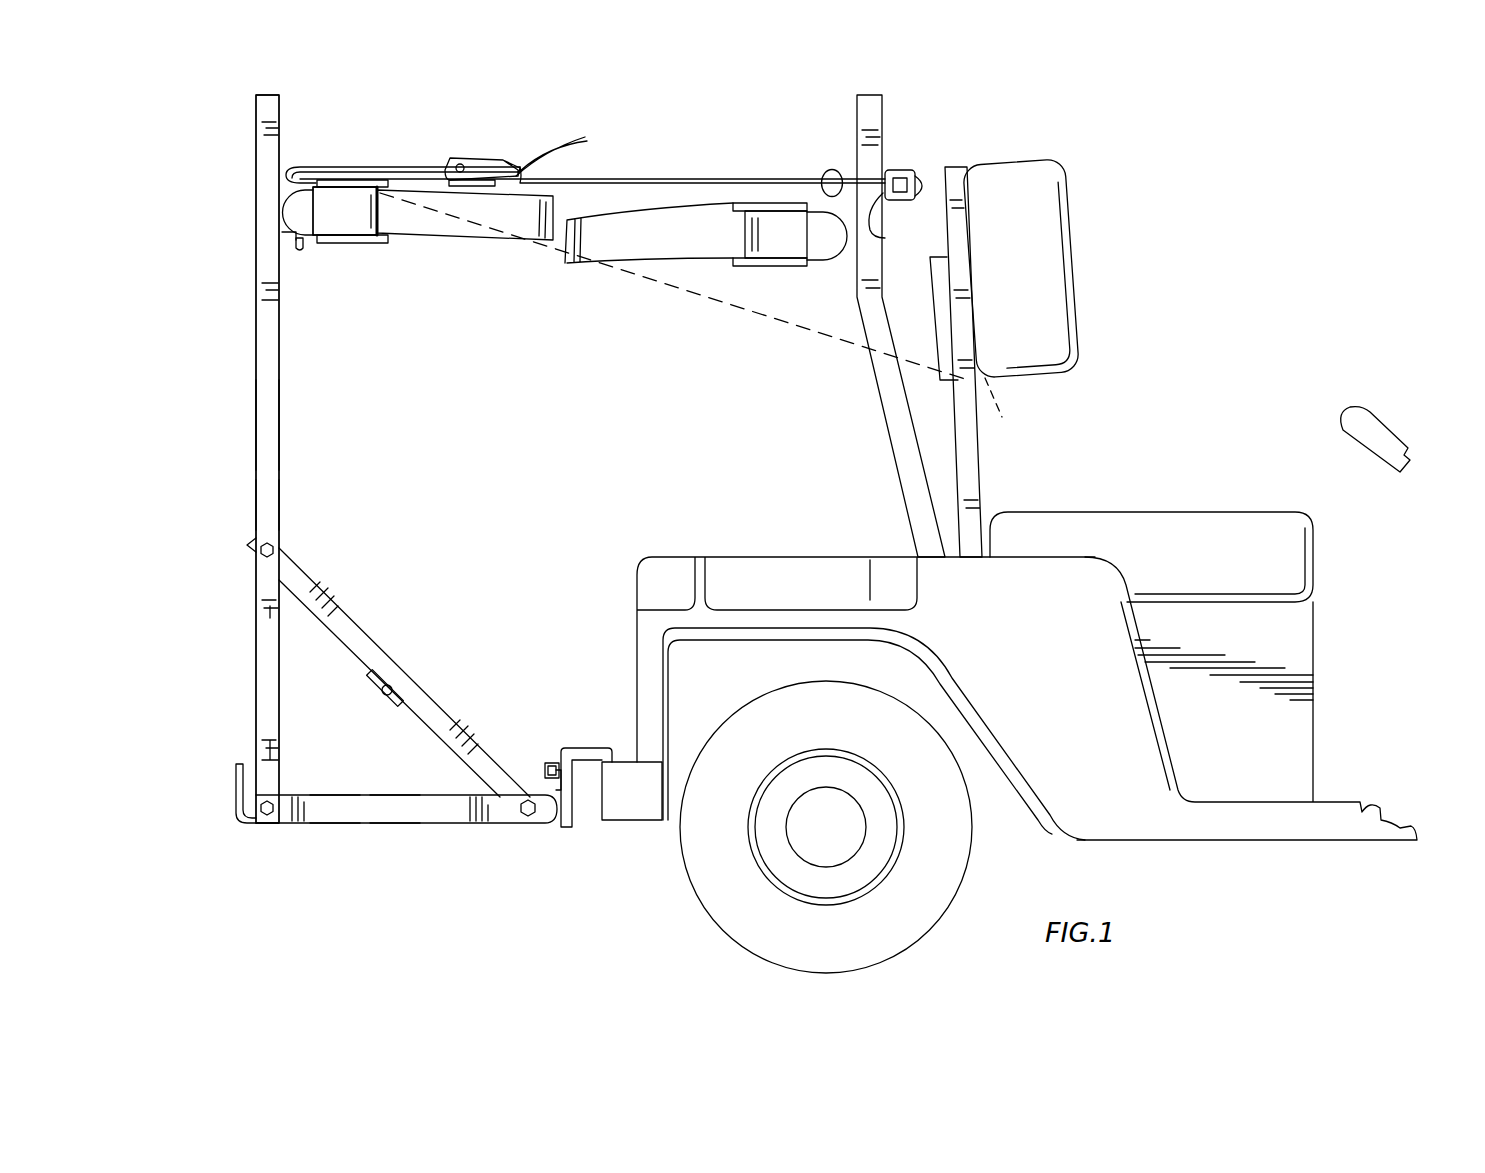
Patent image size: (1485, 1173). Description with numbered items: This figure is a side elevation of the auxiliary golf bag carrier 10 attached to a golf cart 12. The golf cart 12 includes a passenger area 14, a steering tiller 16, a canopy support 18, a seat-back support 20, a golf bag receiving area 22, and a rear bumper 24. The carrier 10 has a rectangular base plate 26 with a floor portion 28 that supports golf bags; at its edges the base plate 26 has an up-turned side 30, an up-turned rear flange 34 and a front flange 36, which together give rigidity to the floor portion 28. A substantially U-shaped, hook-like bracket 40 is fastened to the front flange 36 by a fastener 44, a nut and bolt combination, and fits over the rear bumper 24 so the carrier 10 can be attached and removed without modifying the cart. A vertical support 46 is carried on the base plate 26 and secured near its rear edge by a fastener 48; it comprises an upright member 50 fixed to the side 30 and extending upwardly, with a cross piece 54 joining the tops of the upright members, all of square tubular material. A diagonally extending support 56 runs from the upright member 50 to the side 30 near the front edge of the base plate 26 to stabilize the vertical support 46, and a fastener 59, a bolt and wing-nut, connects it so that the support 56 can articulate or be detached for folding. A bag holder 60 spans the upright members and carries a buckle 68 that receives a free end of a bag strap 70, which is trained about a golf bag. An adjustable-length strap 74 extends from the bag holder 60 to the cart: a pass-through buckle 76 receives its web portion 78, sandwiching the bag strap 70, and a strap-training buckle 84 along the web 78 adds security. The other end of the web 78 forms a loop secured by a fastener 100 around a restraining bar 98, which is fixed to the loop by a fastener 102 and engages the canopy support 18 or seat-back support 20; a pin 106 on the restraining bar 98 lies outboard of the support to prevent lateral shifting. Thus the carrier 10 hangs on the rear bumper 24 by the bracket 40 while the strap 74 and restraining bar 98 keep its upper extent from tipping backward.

The auxiliary golf bag carrier 10 is at (187, 435).
The golf cart 12 is at (1255, 843).
The passenger area 14 is at (1208, 470).
The steering tiller 16 is at (1343, 428).
The canopy support 18 is at (884, 132).
The seat-back support 20 is at (985, 485).
The golf bag receiving area 22 is at (810, 546).
The rear bumper 24 is at (645, 825).
The rectangular base plate 26 is at (393, 826).
The floor portion 28 is at (473, 825).
The up-turned side 30 is at (333, 825).
The up-turned rear flange 34 is at (235, 775).
The front flange 36 is at (556, 783).
The bracket 40 is at (586, 750).
The fastener 44 is at (550, 760).
The vertical support 46 is at (284, 505).
The fastener 48 is at (263, 828).
The upright member 50 is at (279, 445).
The cross piece 54 is at (257, 97).
The diagonally extending support 56 is at (445, 688).
The fastener 59 is at (262, 555).
The bag holder 60 is at (351, 247).
The buckle 68 is at (378, 240).
The bag strap 70 is at (482, 212).
The adjustable-length strap 74 is at (652, 176).
The pass-through buckle 76 is at (299, 252).
The web portion 78 is at (737, 177).
The strap-training buckle 84 is at (498, 158).
The restraining bar 98 is at (930, 162).
The fastener 100 is at (834, 169).
The fastener 102 is at (926, 186).
The pin 106 is at (886, 239).